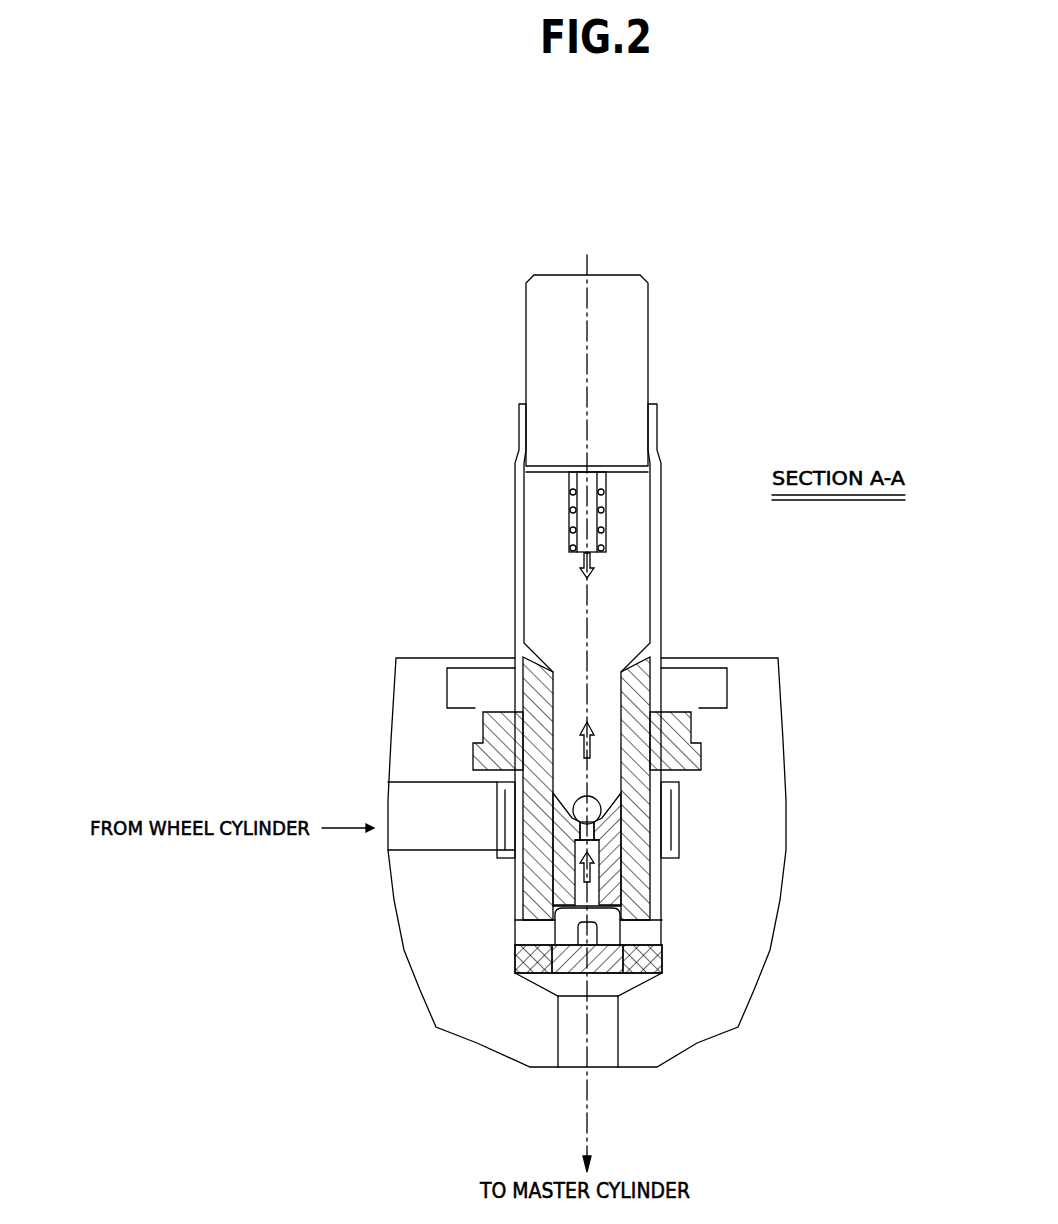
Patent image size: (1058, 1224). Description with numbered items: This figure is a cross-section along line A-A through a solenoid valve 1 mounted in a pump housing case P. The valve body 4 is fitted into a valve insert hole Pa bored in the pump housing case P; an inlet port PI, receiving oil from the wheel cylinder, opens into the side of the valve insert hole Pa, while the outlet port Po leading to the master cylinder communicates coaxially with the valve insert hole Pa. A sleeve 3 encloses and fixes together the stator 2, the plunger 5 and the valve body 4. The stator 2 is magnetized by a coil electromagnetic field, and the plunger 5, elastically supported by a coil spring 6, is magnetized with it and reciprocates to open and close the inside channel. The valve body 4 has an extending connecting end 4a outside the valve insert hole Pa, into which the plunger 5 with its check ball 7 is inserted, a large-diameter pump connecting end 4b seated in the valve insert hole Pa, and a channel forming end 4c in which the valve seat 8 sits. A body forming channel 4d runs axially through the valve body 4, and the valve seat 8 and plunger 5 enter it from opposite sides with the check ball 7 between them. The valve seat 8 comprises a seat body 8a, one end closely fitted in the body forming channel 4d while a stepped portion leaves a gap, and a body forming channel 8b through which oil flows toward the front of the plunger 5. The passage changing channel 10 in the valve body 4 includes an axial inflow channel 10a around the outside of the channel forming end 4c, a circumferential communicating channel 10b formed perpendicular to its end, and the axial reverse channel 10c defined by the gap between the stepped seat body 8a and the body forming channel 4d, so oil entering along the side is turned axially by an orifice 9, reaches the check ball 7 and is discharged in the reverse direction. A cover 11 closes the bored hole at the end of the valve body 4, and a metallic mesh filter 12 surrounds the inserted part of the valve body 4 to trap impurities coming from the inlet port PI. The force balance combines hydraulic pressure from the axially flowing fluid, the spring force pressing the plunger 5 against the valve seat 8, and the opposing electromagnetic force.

The solenoid valve 1 is at (678, 322).
The stator 2 is at (540, 326).
The sleeve 3 is at (520, 453).
The valve body 4 is at (856, 715).
The extending connecting end 4a is at (633, 698).
The pump connecting end 4b is at (640, 735).
The channel forming end 4c is at (658, 871).
The body forming channel 4d is at (615, 813).
The plunger 5 is at (630, 548).
The coil spring 6 is at (568, 512).
The check ball 7 is at (594, 796).
The valve seat 8 is at (322, 962).
The seat body 8a is at (548, 922).
The body forming channel 8b is at (582, 877).
The orifice 9 is at (520, 973).
The passage changing channel 10 is at (893, 921).
The axial inflow channel 10a is at (645, 933).
The circumferential communicating channel 10b is at (663, 895).
The axial reverse channel 10c is at (665, 880).
The cover 11 is at (608, 975).
The filter 12 is at (495, 782).
The pump housing case P is at (520, 1040).
The inlet port PI is at (415, 800).
The valve insert hole Pa is at (548, 978).
The outlet port Po is at (580, 1050).